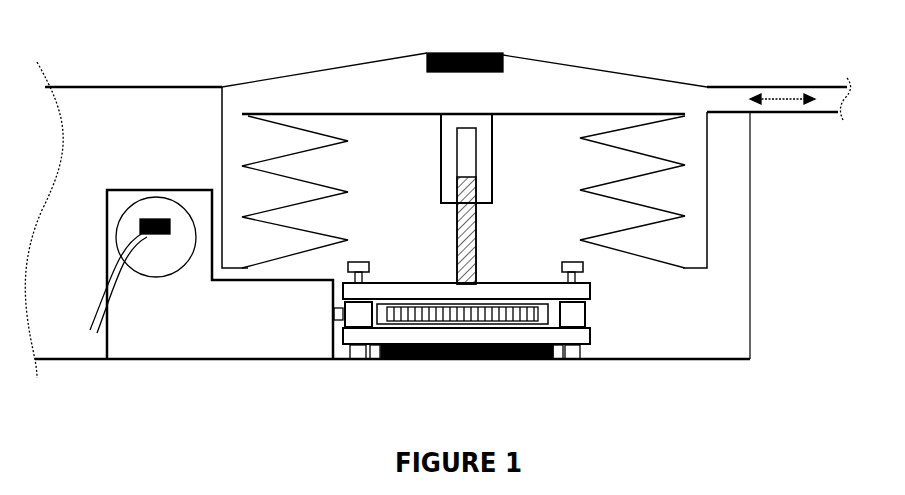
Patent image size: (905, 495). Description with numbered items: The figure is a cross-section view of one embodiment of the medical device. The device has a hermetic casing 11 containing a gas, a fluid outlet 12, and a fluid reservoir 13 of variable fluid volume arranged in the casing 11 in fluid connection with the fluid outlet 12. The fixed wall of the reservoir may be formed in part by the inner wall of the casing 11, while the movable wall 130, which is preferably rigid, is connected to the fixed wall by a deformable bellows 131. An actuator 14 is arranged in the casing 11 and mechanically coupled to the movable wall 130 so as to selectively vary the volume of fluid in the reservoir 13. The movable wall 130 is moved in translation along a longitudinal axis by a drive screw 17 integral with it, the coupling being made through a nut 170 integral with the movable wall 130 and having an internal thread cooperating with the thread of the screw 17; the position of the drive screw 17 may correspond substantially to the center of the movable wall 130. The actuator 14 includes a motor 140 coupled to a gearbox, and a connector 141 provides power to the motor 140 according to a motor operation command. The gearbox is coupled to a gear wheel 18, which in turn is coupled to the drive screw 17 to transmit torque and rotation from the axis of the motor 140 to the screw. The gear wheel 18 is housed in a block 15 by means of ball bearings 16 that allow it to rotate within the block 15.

The hermetic casing 11 is at (148, 78).
The fluid outlet 12 is at (798, 84).
The fluid reservoir 13 is at (355, 78).
The movable wall 130 is at (520, 110).
The deformable bellows 131 is at (648, 150).
The actuator 14 is at (160, 195).
The motor 140 is at (150, 280).
The connector 141 is at (105, 318).
The block 15 is at (383, 283).
The ball bearings 16 is at (414, 305).
The drive screw 17 is at (478, 262).
The nut 170 is at (493, 178).
The gear wheel 18 is at (524, 300).